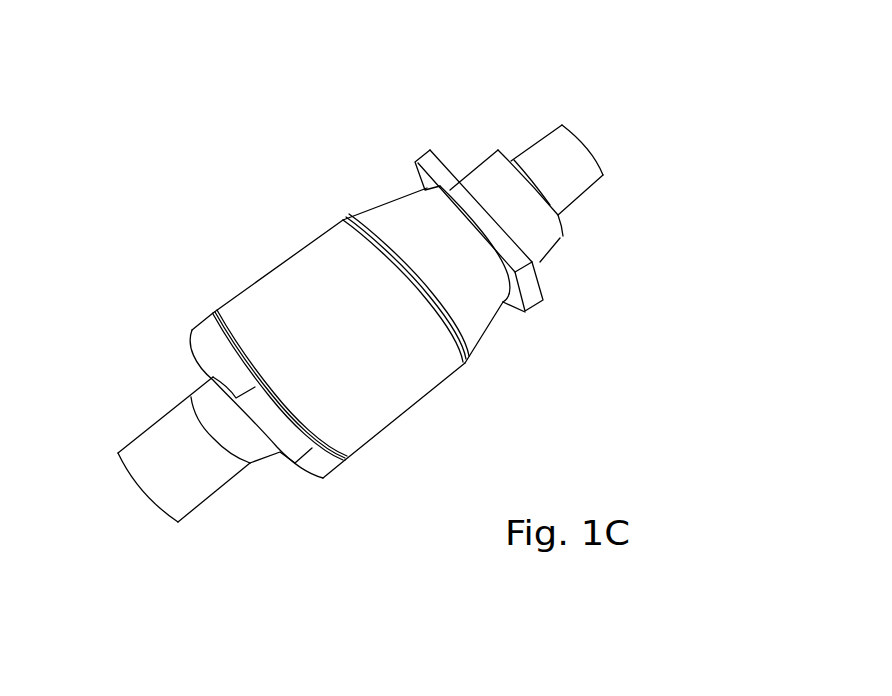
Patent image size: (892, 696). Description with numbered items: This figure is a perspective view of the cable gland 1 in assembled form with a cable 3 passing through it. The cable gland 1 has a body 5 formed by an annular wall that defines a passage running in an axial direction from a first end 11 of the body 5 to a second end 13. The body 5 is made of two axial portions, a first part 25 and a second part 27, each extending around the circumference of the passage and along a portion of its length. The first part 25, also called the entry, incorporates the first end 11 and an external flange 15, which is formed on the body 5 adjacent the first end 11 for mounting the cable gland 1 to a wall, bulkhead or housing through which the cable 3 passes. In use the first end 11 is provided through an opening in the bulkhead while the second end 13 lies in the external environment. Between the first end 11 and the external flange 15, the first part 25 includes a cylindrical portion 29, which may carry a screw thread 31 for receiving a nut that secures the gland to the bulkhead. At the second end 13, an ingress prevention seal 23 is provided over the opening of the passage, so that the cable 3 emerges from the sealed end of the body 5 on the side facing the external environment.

The cable gland 1 is at (288, 204).
The cable 3 is at (578, 159).
The body 5 is at (423, 357).
The first end 11 is at (488, 180).
The second end 13 is at (203, 340).
The external flange 15 is at (433, 164).
The ingress prevention seal 23 is at (246, 438).
The first part 25 is at (365, 405).
The second part 27 is at (483, 295).
The cylindrical portion 29 is at (543, 226).
The screw thread 31 is at (508, 185).